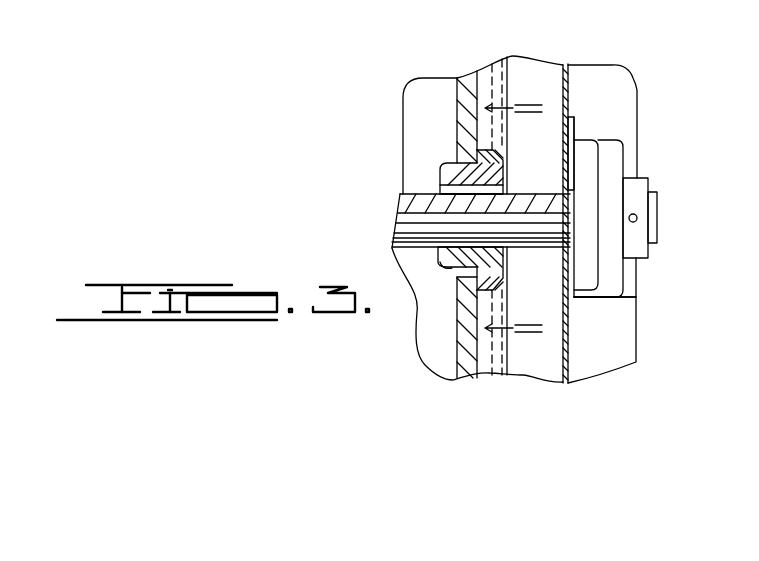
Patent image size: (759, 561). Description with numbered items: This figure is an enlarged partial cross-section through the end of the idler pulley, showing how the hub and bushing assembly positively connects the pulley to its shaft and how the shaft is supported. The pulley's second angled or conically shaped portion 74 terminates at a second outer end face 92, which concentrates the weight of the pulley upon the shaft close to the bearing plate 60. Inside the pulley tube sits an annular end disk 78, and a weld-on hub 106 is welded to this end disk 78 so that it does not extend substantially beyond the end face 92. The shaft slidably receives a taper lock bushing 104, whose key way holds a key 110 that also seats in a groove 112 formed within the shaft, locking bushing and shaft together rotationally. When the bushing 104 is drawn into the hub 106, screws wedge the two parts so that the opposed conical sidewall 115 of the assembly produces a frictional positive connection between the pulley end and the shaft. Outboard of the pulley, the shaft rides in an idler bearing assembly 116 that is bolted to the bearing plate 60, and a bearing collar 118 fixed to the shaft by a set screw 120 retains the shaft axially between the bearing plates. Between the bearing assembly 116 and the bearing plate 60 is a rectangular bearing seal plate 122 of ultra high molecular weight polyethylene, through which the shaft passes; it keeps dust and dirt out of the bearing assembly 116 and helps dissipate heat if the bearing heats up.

The bearing plate 60 is at (570, 83).
The second angled or conically shaped portion 74 is at (538, 250).
The annular end disk 78 is at (458, 98).
The second outer end face 92 is at (510, 63).
The taper lock bushing 104 is at (440, 250).
The weld-on hub 106 is at (460, 160).
The key 110 is at (445, 190).
The groove 112 is at (403, 194).
The opposed conical sidewall 115 is at (455, 266).
The idler bearing assembly 116 is at (648, 297).
The bearing collar 118 is at (637, 187).
The set screw 120 is at (637, 218).
The bearing seal plate 122 is at (574, 128).